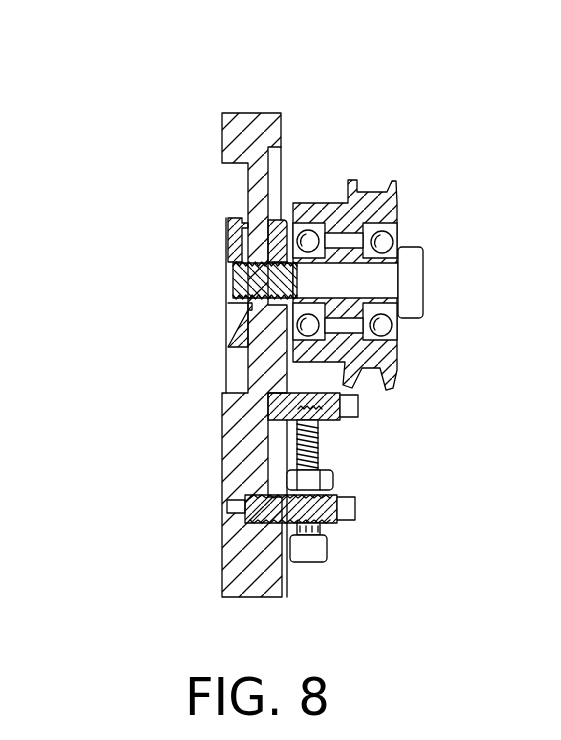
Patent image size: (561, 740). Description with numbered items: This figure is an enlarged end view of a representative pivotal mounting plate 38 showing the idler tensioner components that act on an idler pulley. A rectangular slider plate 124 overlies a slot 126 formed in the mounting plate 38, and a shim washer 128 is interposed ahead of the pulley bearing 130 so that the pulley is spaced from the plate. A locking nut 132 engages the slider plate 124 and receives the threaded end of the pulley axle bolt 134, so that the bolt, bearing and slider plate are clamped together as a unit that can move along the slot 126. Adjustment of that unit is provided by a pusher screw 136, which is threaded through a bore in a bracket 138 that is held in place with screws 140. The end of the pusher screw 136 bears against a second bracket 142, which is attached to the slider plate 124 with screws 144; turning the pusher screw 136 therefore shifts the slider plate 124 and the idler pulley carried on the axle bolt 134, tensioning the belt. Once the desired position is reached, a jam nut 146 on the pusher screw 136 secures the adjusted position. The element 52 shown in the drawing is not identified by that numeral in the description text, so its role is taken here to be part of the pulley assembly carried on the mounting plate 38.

The mounting plate 38 is at (250, 110).
The sprocket / bearing housing 52 is at (382, 245).
The slider plate 124 is at (279, 218).
The slot 126 is at (258, 367).
The shim washer 128 is at (296, 254).
The pulley bearing 130 is at (325, 340).
The locking nut 132 is at (219, 214).
The pulley axle bolt 134 is at (417, 278).
The pusher screw 136 is at (328, 563).
The bracket 138 is at (329, 526).
The screws 140 is at (353, 521).
The bracket 142 is at (333, 423).
The screws 144 is at (358, 414).
The jam nut 146 is at (331, 482).